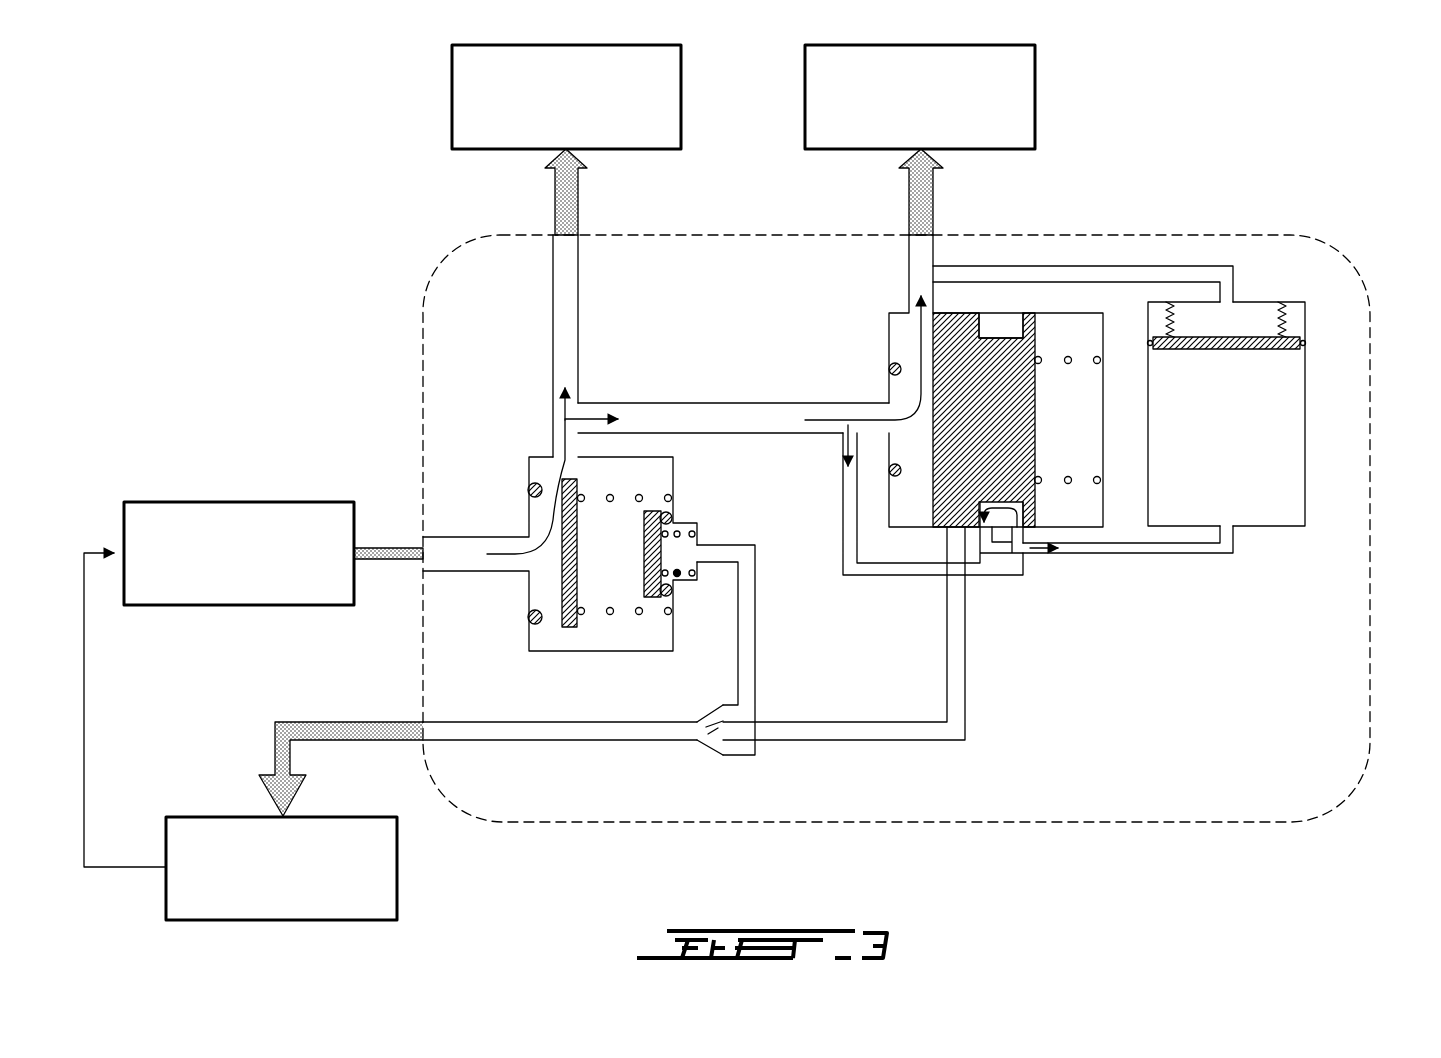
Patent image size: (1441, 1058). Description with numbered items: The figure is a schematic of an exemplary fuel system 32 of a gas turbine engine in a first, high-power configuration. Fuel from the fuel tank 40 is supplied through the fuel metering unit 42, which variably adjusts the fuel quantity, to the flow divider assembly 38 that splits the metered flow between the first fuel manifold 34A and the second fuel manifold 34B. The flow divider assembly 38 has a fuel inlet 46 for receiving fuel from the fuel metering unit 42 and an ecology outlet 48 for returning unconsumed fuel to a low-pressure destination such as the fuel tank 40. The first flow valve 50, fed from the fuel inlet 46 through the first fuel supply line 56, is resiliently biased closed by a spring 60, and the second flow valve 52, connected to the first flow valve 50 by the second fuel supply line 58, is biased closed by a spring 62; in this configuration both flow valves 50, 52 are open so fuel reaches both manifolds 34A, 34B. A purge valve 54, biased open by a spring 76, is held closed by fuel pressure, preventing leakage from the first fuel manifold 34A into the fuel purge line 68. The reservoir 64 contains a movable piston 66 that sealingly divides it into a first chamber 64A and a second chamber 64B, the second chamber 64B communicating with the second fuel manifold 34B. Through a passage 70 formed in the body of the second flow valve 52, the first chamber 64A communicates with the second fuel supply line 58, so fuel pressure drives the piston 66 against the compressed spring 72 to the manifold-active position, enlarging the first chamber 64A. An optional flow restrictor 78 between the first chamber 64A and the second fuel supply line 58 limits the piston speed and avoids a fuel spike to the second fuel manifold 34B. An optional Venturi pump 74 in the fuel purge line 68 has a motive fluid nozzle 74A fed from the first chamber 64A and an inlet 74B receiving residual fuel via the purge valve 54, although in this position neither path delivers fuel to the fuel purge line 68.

The fuel system 32 is at (300, 188).
The first fuel manifold 34A is at (681, 98).
The second fuel manifold 34B is at (1035, 98).
The flow divider assembly 38 is at (1140, 784).
The fuel tank 40 is at (397, 868).
The fuel metering unit 42 is at (203, 500).
The fuel inlet 46 is at (421, 540).
The ecology outlet 48 is at (416, 731).
The first flow valve 50 is at (562, 570).
The second flow valve 52 is at (958, 313).
The purge valve 54 is at (652, 509).
The first fuel supply line 56 is at (460, 556).
The second fuel supply line 58 is at (738, 418).
The spring 60 is at (610, 615).
The spring 62 is at (1070, 355).
The reservoir 64 is at (1247, 535).
The first chamber 64A is at (1263, 483).
The second chamber 64B is at (1203, 318).
The piston 66 is at (1300, 333).
The fuel purge line 68 is at (567, 743).
The passage 70 is at (1000, 328).
The spring 72 is at (1283, 315).
The Venturi pump 74 is at (742, 775).
The motive fluid nozzle 74A is at (716, 740).
The inlet 74B is at (745, 705).
The spring 76 is at (678, 576).
The flow restrictor 78 is at (878, 545).